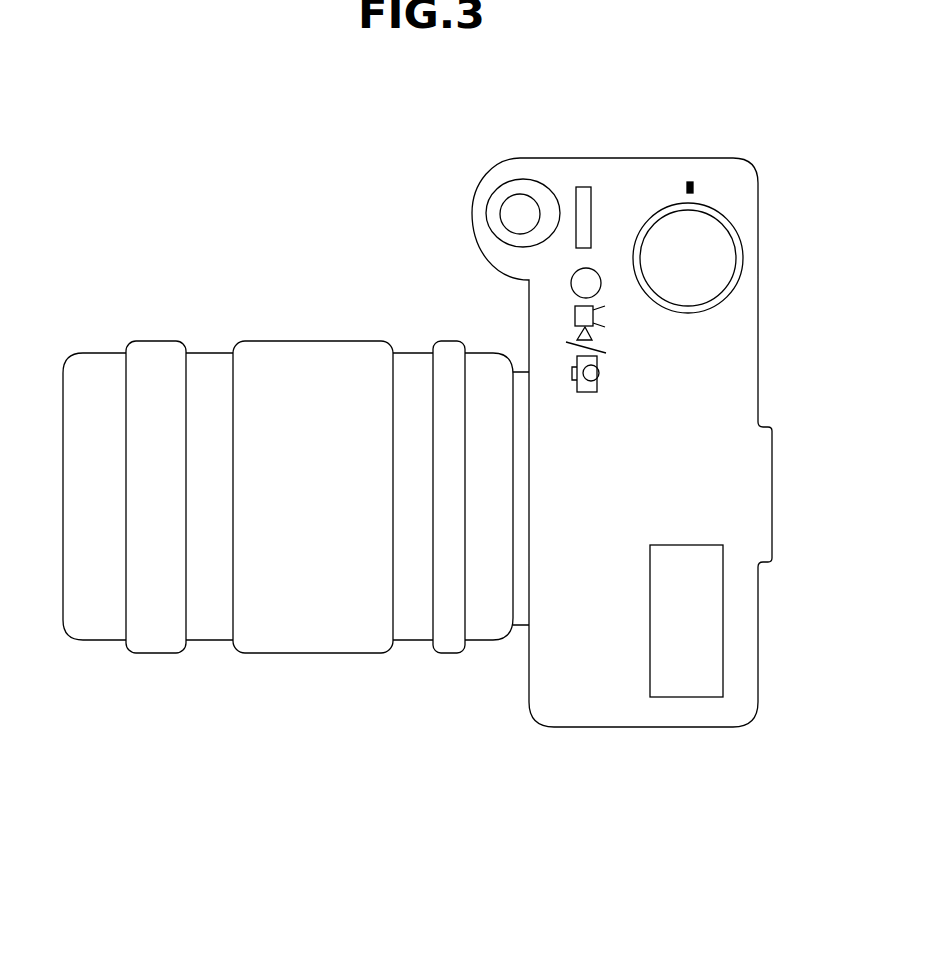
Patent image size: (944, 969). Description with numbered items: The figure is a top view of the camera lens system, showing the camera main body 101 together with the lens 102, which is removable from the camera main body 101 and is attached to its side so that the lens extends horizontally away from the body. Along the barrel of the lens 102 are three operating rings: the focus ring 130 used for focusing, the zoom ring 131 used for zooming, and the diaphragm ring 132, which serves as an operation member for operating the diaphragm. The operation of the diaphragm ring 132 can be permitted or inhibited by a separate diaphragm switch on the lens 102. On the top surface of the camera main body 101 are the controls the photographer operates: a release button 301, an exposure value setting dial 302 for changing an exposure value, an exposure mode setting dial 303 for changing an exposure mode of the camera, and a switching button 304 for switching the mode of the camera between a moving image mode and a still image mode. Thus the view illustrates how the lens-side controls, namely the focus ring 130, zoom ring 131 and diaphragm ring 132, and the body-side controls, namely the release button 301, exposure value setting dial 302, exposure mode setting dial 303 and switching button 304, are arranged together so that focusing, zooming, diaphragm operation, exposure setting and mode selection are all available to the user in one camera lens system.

The camera main body 101 is at (603, 710).
The lens 102 is at (90, 623).
The focus ring 130 is at (153, 350).
The zoom ring 131 is at (298, 350).
The diaphragm ring 132 is at (448, 350).
The release button 301 is at (508, 187).
The exposure value setting dial 302 is at (583, 192).
The exposure mode setting dial 303 is at (715, 252).
The switching button 304 is at (593, 287).